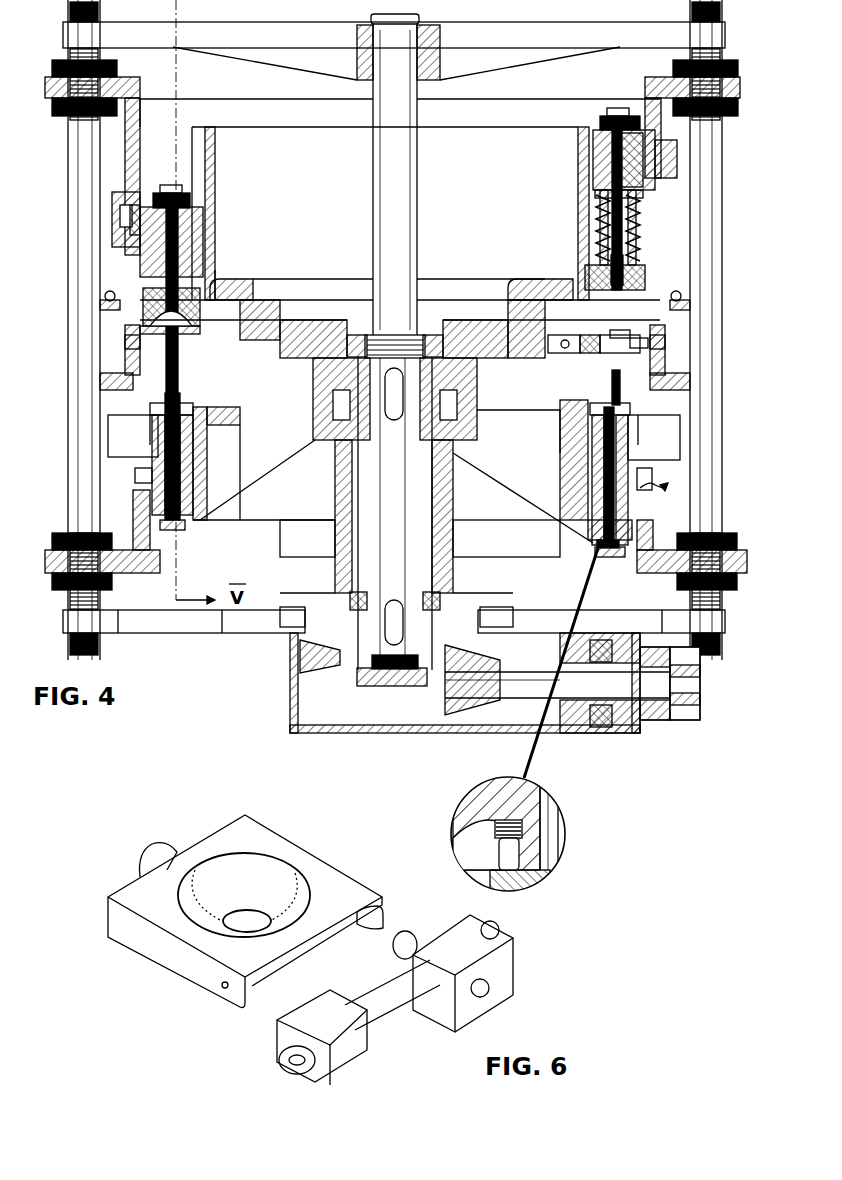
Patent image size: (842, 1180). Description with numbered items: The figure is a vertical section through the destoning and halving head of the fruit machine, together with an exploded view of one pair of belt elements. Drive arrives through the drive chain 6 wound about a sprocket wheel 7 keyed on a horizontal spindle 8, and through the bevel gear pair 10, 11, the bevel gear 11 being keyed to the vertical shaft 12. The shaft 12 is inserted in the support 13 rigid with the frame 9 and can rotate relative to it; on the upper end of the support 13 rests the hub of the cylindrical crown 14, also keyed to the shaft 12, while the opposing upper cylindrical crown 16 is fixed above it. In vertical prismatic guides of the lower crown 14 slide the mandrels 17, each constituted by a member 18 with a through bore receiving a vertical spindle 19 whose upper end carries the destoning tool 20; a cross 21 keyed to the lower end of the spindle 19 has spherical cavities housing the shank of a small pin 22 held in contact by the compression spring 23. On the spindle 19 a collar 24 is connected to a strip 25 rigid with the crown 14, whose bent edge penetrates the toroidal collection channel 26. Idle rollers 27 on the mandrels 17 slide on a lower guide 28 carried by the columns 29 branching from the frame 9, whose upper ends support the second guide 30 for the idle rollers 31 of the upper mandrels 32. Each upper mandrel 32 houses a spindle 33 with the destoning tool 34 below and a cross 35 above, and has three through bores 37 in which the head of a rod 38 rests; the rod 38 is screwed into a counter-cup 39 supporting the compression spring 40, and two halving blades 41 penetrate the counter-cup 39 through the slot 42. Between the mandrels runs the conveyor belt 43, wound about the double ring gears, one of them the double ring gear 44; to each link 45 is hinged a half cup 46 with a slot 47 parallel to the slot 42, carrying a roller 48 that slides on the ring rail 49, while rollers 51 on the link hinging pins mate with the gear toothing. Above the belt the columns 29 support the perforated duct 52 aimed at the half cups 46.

In FIG. 4, the drive chain 6 is at (677, 720).
In FIG. 4, the sprocket wheel 7 is at (672, 705).
In FIG. 4, the horizontal spindle 8 is at (590, 710).
In FIG. 4, the frame 9 is at (136, 633).
In FIG. 4, the bevel gear 10 is at (477, 712).
In FIG. 4, the bevel gear 11 is at (340, 670).
In FIG. 4, the vertical shaft 12 is at (395, 670).
In FIG. 4, the support 13 is at (335, 460).
In FIG. 4, the cylindrical crown 14 is at (245, 500).
In FIG. 4, the upper cylindrical crown 16 is at (232, 280).
In FIG. 4, the mandrel 17 is at (660, 483).
In FIG. 4, the member 18 is at (585, 506).
In FIG. 4, the vertical spindle 19 is at (165, 465).
In FIG. 4, the destoning tool 20 is at (605, 398).
In FIG. 4, the cross 21 is at (185, 520).
In FIG. 4, the small pin 22 is at (595, 554).
In FIG. 4, the compression spring 23 is at (588, 530).
In FIG. 4, the collar 24 is at (568, 425).
In FIG. 4, the strip 25 is at (530, 424).
In FIG. 4, the toroidal collection channel 26 is at (118, 437).
In FIG. 4, the idle rollers 27 is at (138, 485).
In FIG. 4, the lower guide 28 is at (162, 565).
In FIG. 4, the columns 29 is at (80, 196).
In FIG. 4, the second guide 30 is at (130, 128).
In FIG. 4, the idle rollers 31 is at (113, 222).
In FIG. 4, the upper mandrel 32 is at (643, 190).
In FIG. 4, the spindle 33 is at (211, 280).
In FIG. 4, the destoning tool 34 is at (585, 238).
In FIG. 4, the cross 35 is at (157, 187).
In FIG. 4, the through bores 37 is at (602, 110).
In FIG. 4, the rod 38 is at (222, 260).
In FIG. 4, the counter-cup 39 is at (142, 292).
In FIG. 4, the compression spring 40 is at (567, 238).
In FIG. 4, the halving blades 41 is at (645, 252).
In FIG. 4, the slot 42 is at (570, 254).
In FIG. 4, the conveyor belt 43 is at (655, 336).
In FIG. 4, the double ring gear 44 is at (205, 335).
In FIG. 4, the link 45 is at (310, 335).
In FIG. 6, the link 45 is at (420, 1028).
In FIG. 4, the half cup 46 is at (135, 375).
In FIG. 6, the half cup 46 is at (148, 950).
In FIG. 4, the slot 47 is at (605, 338).
In FIG. 6, the slot 47 is at (290, 873).
In FIG. 4, the roller 48 is at (115, 338).
In FIG. 6, the roller 48 is at (146, 843).
In FIG. 4, the rail 49 is at (125, 364).
In FIG. 4, the rollers 51 is at (255, 295).
In FIG. 4, the duct 52 is at (105, 295).